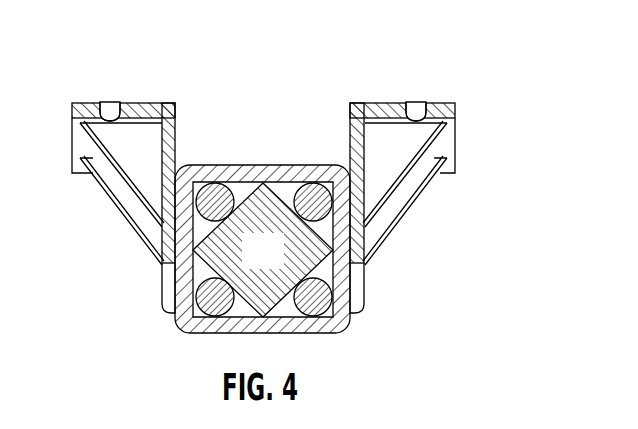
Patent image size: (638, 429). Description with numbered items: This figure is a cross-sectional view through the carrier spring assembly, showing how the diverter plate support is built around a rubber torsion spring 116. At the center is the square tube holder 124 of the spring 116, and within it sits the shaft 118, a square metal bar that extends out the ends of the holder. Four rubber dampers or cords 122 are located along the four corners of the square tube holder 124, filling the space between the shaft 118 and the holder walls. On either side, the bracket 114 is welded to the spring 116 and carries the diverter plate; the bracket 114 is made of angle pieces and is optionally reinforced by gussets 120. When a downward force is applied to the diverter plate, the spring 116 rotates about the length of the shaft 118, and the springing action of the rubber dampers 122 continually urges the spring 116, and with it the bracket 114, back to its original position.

The bracket 114 is at (138, 102).
The spring 116 is at (257, 176).
The shaft 118 is at (280, 265).
The gusset 120 is at (132, 180).
The rubber damper 122 is at (214, 184).
The square tube holder 124 is at (237, 166).